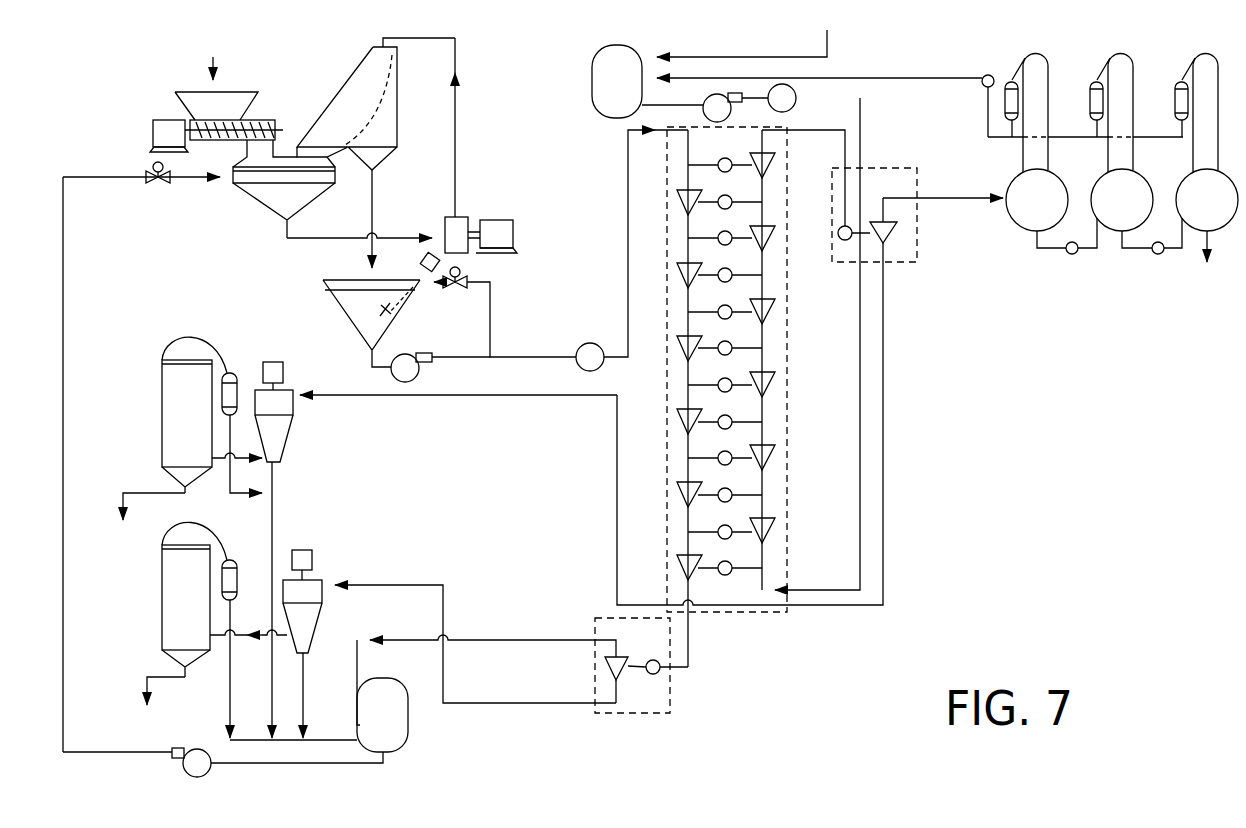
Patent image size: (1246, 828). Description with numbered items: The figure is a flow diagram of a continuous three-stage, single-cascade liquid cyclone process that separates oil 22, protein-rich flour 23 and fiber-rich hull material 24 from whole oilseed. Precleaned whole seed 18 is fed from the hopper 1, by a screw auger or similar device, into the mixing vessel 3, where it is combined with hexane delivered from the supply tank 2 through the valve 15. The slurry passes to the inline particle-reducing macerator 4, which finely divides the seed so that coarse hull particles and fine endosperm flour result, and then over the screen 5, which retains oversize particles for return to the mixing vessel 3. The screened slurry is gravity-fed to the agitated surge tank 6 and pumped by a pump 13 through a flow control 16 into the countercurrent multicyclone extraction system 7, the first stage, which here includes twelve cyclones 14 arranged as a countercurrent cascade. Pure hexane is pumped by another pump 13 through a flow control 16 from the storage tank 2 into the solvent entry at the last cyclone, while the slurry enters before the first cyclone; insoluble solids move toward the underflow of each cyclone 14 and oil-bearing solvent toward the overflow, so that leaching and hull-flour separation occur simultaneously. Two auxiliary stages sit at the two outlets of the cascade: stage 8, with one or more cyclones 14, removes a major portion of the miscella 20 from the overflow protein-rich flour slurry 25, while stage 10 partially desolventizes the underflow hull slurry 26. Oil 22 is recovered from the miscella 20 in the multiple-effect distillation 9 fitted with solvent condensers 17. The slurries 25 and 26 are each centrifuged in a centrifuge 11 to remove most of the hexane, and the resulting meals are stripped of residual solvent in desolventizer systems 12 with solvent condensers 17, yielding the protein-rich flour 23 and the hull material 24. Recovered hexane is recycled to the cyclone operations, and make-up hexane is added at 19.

The hopper 1 is at (193, 100).
The supply tank 2 is at (593, 82).
The mixing vessel 3 is at (258, 205).
The macerator 4 is at (446, 217).
The screen 5 is at (332, 98).
The agitated surge tank 6 is at (340, 312).
The countercurrent multicyclone extraction system 7 is at (666, 463).
The auxiliary cyclone stage 8 is at (917, 247).
The distillation 9 is at (1012, 176).
The auxiliary cyclone stage 10 is at (670, 685).
The centrifuge 11 is at (291, 386).
The desolventizer system 12 is at (162, 380).
The pump 13 is at (419, 372).
The cyclone 14 is at (772, 312).
The valve 15 is at (152, 186).
The flow control 16 is at (590, 343).
The solvent condenser 17 is at (240, 372).
The whole seed 18 is at (213, 58).
The make-up hexane addition 19 is at (774, 56).
The miscella stream 20 is at (962, 163).
The oil 22 is at (1211, 264).
The protein-rich flour 23 is at (146, 524).
The fiber-rich hull material 24 is at (161, 707).
The overflow protein-rich flour slurry 25 is at (540, 405).
The underflow hull slurry 26 is at (445, 584).